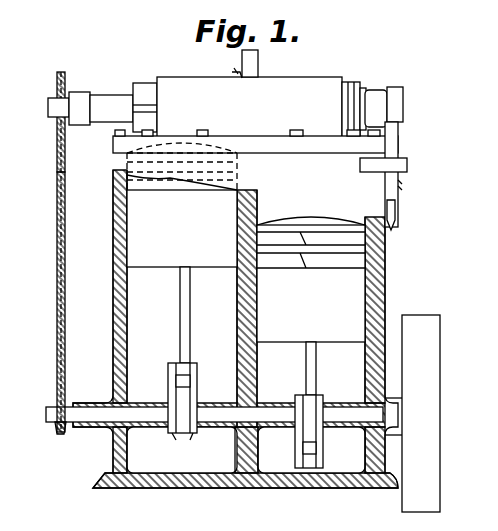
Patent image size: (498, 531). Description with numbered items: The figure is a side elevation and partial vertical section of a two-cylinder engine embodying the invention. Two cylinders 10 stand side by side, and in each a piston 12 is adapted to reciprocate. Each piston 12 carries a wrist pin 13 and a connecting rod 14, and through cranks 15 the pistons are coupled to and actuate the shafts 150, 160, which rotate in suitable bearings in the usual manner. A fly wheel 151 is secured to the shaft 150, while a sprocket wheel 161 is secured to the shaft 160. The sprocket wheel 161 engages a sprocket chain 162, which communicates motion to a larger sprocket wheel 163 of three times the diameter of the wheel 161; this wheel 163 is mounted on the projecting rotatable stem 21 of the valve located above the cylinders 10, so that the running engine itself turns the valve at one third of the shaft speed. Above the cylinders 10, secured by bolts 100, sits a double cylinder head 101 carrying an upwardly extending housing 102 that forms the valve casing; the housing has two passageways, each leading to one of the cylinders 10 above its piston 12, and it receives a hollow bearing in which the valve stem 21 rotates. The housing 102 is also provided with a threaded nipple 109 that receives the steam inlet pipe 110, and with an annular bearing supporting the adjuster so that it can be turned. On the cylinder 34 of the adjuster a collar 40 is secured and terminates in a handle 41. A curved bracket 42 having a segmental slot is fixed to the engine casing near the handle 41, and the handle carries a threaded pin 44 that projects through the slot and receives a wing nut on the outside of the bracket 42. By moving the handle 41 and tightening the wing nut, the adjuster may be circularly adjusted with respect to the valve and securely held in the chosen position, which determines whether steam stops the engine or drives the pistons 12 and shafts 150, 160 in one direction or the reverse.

The cylinder 10 is at (120, 296).
The piston 12 is at (246, 242).
The wrist pin 13 is at (198, 380).
The connecting rod 14 is at (191, 315).
The crank 15 is at (183, 449).
The valve stem 21 is at (50, 108).
The cylinder 34 is at (378, 96).
The collar 40 is at (426, 75).
The handle 41 is at (399, 141).
The curved bracket 42 is at (408, 165).
The threaded pin 44 is at (403, 186).
The bolt 100 is at (288, 132).
The double cylinder head 101 is at (299, 150).
The housing 102 is at (249, 107).
The threaded nipple 109 is at (232, 71).
The steam inlet pipe 110 is at (262, 58).
The shaft 150 is at (383, 415).
The fly wheel 151 is at (412, 413).
The shaft 160 is at (92, 415).
The sprocket wheel 161 is at (60, 430).
The sprocket chain 162 is at (65, 236).
The sprocket wheel 163 is at (66, 82).